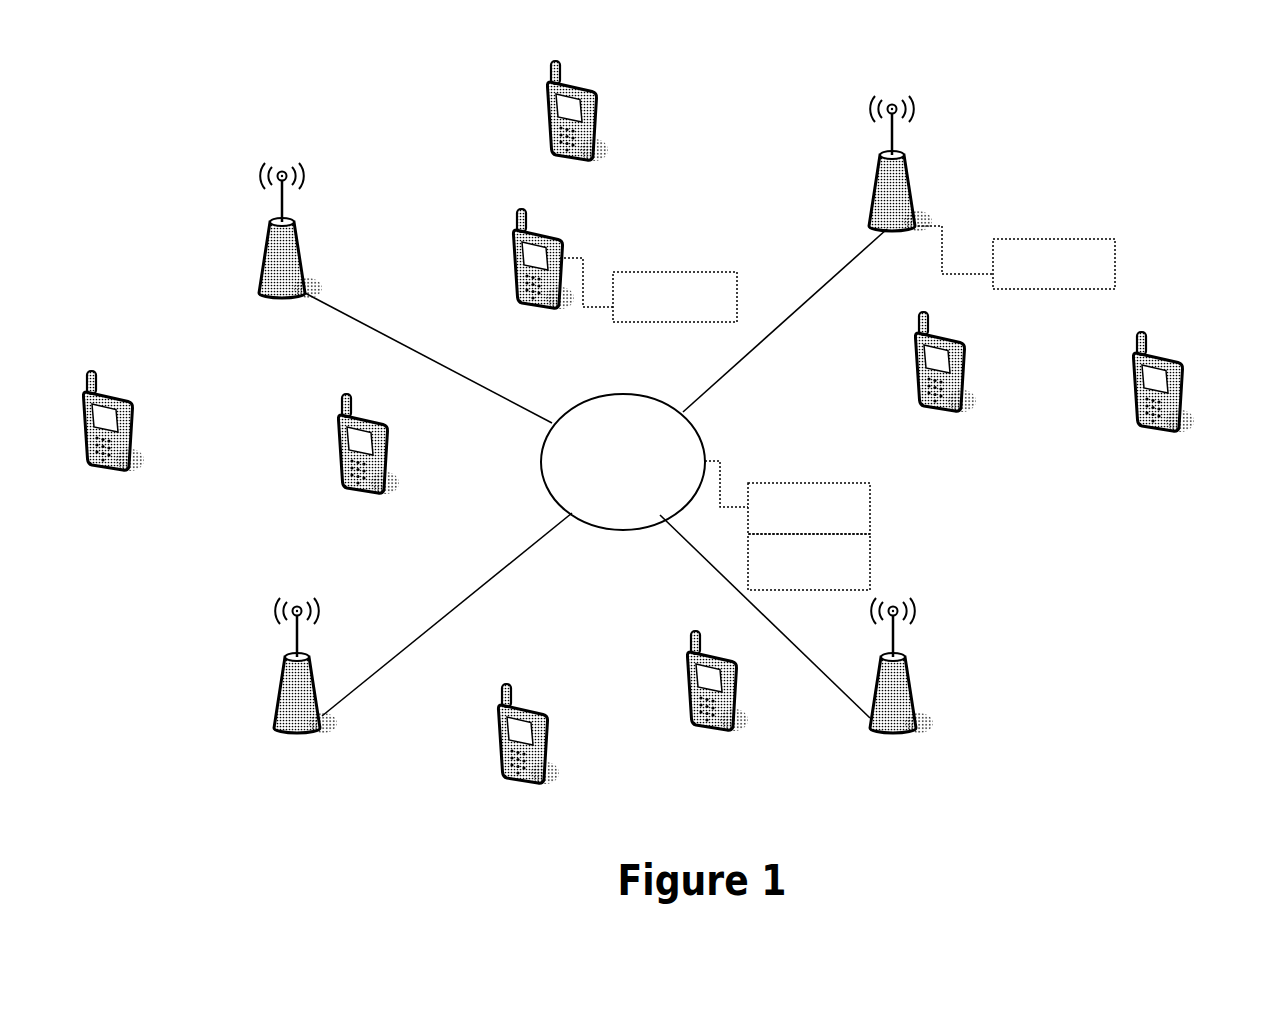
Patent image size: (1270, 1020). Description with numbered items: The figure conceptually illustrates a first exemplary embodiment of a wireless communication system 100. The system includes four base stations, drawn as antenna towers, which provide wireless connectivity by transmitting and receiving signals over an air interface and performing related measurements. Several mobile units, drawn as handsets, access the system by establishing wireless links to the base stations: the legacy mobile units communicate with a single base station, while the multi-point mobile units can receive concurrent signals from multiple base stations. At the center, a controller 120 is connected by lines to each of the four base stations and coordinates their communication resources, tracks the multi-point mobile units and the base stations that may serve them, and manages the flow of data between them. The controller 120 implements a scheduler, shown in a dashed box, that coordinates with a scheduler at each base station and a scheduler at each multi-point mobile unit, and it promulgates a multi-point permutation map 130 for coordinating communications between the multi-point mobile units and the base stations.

The wireless communication system 100 is at (1162, 92).
The controller 120 is at (623, 462).
The multi-point permutation map 130 is at (870, 567).